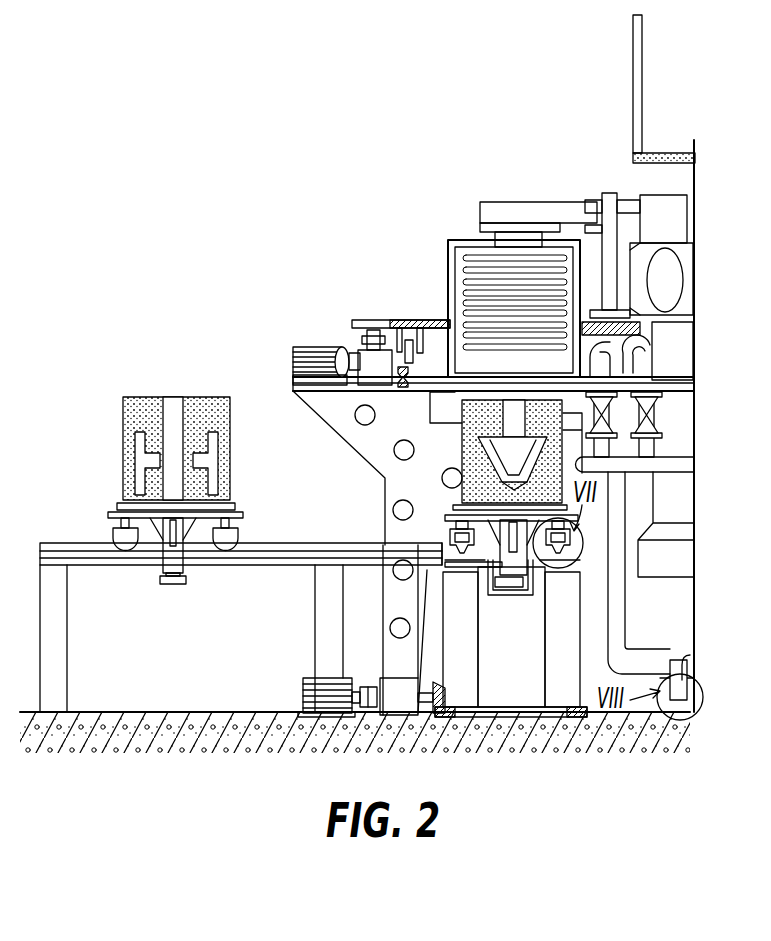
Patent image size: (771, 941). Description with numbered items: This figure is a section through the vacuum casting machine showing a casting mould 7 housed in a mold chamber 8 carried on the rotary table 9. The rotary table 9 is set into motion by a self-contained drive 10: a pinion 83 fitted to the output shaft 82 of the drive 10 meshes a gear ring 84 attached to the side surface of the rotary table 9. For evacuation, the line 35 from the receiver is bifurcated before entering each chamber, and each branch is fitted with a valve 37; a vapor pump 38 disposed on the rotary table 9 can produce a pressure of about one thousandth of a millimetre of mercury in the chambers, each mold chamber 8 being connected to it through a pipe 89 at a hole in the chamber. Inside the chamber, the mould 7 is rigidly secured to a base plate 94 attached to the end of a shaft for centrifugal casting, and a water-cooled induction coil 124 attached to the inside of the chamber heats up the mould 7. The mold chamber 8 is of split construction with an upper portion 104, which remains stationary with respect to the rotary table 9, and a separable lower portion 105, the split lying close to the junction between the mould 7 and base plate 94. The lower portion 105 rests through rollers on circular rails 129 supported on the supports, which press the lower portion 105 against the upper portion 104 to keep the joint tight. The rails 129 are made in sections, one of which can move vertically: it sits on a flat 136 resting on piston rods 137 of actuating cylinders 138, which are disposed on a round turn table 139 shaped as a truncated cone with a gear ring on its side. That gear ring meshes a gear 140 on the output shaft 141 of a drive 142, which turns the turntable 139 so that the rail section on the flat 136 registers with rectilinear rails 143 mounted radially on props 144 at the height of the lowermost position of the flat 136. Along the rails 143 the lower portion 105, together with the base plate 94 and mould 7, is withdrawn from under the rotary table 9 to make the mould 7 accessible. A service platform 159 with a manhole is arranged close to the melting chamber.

The casting mould 7 is at (230, 445).
The mold chamber 8 is at (494, 284).
The rotary table 9 is at (423, 313).
The drive 10 is at (318, 347).
The line 35 is at (622, 658).
The valve 37 is at (658, 427).
The vapor pump 38 is at (690, 500).
The output shaft 82 is at (358, 352).
The pinion 83 is at (372, 330).
The gear ring 84 is at (402, 320).
The pipe 89 is at (603, 215).
The base plate 94 is at (120, 503).
The upper portion 104 is at (450, 268).
The lower portion 105 is at (240, 515).
The induction coil 124 is at (460, 243).
The circular rails 129 is at (462, 572).
The flat 136 is at (486, 590).
The piston rods 137 is at (562, 580).
The actuating cylinders 138 is at (545, 632).
The turn table 139 is at (510, 706).
The gear 140 is at (443, 690).
The output shaft 141 is at (420, 695).
The drive 142 is at (345, 678).
The rectilinear rails 143 is at (300, 553).
The props 144 is at (67, 645).
The service platform 159 is at (650, 153).